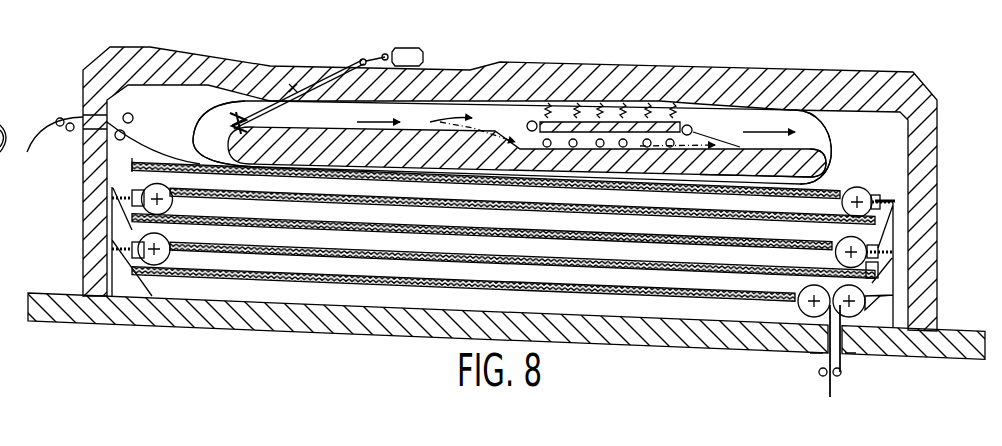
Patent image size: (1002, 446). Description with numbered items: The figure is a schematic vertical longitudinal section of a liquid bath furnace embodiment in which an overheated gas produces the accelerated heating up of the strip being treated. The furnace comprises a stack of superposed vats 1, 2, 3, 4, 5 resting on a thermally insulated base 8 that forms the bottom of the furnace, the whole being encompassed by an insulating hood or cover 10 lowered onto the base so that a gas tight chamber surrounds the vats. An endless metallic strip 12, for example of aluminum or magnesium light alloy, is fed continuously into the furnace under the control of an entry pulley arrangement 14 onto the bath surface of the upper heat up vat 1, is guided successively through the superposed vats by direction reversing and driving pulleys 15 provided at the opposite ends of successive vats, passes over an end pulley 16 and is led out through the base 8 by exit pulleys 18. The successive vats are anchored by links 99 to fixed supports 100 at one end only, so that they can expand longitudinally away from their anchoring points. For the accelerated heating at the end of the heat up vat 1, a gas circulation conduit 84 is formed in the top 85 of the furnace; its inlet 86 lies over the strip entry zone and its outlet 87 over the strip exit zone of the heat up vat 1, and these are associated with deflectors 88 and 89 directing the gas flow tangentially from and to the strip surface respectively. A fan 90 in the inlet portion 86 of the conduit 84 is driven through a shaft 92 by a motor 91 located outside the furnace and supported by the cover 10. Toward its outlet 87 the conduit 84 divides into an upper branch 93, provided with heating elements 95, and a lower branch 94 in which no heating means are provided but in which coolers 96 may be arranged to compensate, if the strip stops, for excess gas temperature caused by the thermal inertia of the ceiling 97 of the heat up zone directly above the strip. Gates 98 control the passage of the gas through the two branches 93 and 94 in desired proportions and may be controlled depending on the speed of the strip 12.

The heat up vat 1 is at (131, 163).
The vat 2 is at (245, 200).
The vat 3 is at (277, 228).
The vat 4 is at (300, 250).
The vat 5 is at (327, 276).
The thermally insulated base 8 is at (382, 321).
The insulating hood or cover 10 is at (853, 82).
The endless metallic strip 12 is at (28, 142).
The entry pulley arrangement 14 is at (126, 116).
The direction reversing and driving pulleys 15 is at (131, 242).
The end pulley 16 is at (828, 312).
The exit pulleys 18 is at (820, 372).
The gas circulation conduit 84 is at (556, 126).
The top of the furnace 85 is at (527, 152).
The inlet 86 is at (205, 124).
The outlet 87 is at (826, 152).
The deflector 88 is at (207, 118).
The deflector 89 is at (832, 176).
The fan 90 is at (238, 112).
The motor 91 is at (406, 48).
The shaft 92 is at (332, 68).
The upper branch 93 is at (612, 112).
The lower branch 94 is at (633, 142).
The heating elements 95 is at (578, 106).
The coolers 96 is at (648, 146).
The ceiling 97 is at (748, 178).
The gates 98 is at (515, 124).
The links 99 is at (133, 192).
The fixed supports 100 is at (113, 267).